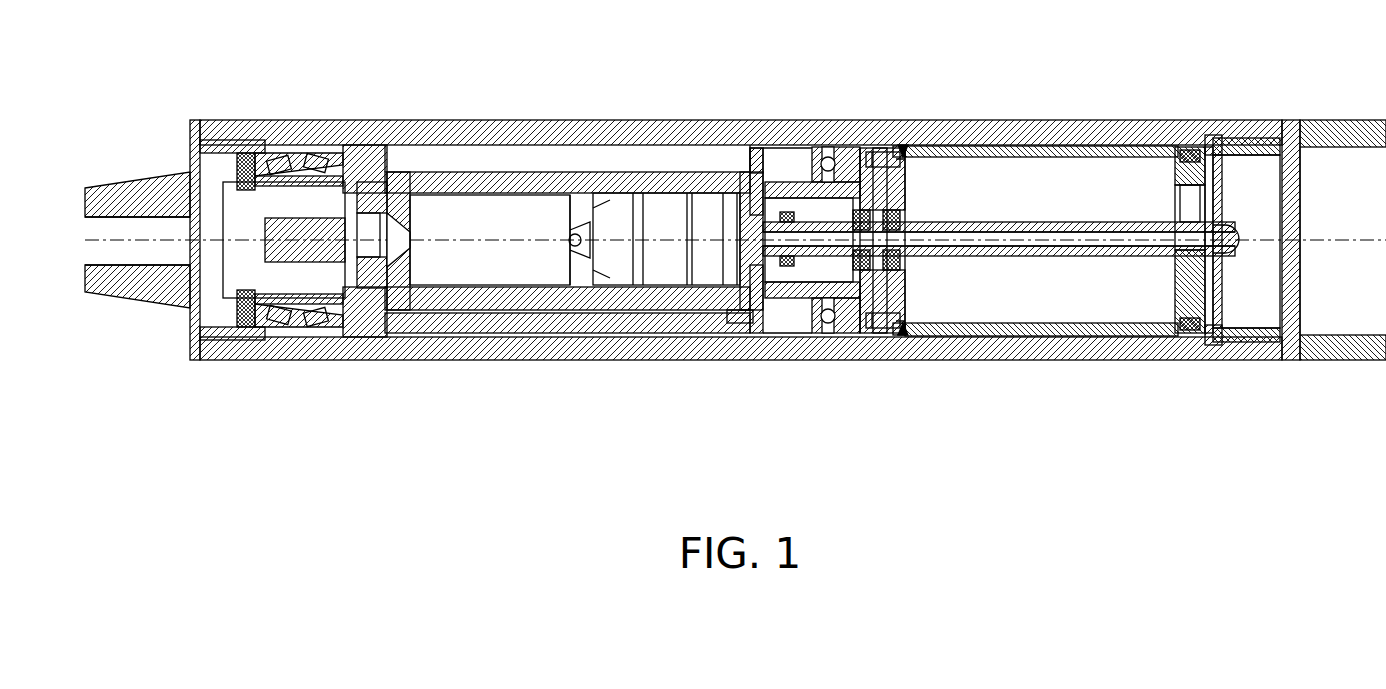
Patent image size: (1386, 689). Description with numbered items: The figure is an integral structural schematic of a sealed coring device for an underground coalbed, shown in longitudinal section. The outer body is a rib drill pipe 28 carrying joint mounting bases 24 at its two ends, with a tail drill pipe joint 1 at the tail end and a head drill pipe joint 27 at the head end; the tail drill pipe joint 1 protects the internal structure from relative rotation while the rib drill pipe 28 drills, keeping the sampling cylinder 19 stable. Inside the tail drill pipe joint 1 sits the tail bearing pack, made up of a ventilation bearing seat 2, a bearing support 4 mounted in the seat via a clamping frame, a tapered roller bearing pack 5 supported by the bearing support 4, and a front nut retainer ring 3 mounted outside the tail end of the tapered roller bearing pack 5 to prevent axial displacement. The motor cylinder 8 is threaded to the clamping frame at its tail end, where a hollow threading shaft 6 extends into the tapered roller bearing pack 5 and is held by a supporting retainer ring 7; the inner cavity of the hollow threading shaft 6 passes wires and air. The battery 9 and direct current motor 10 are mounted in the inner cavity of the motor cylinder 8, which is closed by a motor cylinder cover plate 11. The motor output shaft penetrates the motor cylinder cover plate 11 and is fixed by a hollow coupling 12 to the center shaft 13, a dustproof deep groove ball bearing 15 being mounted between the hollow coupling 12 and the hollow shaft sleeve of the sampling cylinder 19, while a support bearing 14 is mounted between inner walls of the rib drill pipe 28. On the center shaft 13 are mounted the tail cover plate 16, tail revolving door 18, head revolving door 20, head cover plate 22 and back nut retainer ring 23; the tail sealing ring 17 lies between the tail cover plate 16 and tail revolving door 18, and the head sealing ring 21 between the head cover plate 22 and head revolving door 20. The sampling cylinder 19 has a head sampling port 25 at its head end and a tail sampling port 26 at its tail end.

The tail drill pipe joint 1 is at (180, 283).
The ventilation bearing seat 2 is at (213, 348).
The front nut retainer ring 3 is at (245, 340).
The bearing support 4 is at (253, 317).
The tapered roller bearing pack 5 is at (303, 337).
The hollow threading shaft 6 is at (313, 320).
The supporting retainer ring 7 is at (340, 273).
The motor cylinder 8 is at (393, 293).
The battery 9 is at (460, 257).
The direct current motor 10 is at (613, 250).
The motor cylinder cover plate 11 is at (802, 248).
The hollow coupling 12 is at (830, 240).
The center shaft 13 is at (828, 318).
The support bearing 14 is at (832, 330).
The dustproof deep groove ball bearing 15 is at (857, 300).
The tail cover plate 16 is at (880, 298).
The tail sealing ring 17 is at (900, 305).
The tail revolving door 18 is at (905, 330).
The sampling cylinder 19 is at (920, 325).
The head revolving door 20 is at (1190, 290).
The head sealing ring 21 is at (1197, 312).
The head cover plate 22 is at (1205, 285).
The back nut retainer ring 23 is at (1235, 339).
The joint mounting base 24 is at (1257, 334).
The head sampling port 25 is at (1215, 125).
The tail sampling port 26 is at (903, 150).
The head drill pipe joint 27 is at (1308, 120).
The rib drill pipe 28 is at (963, 120).